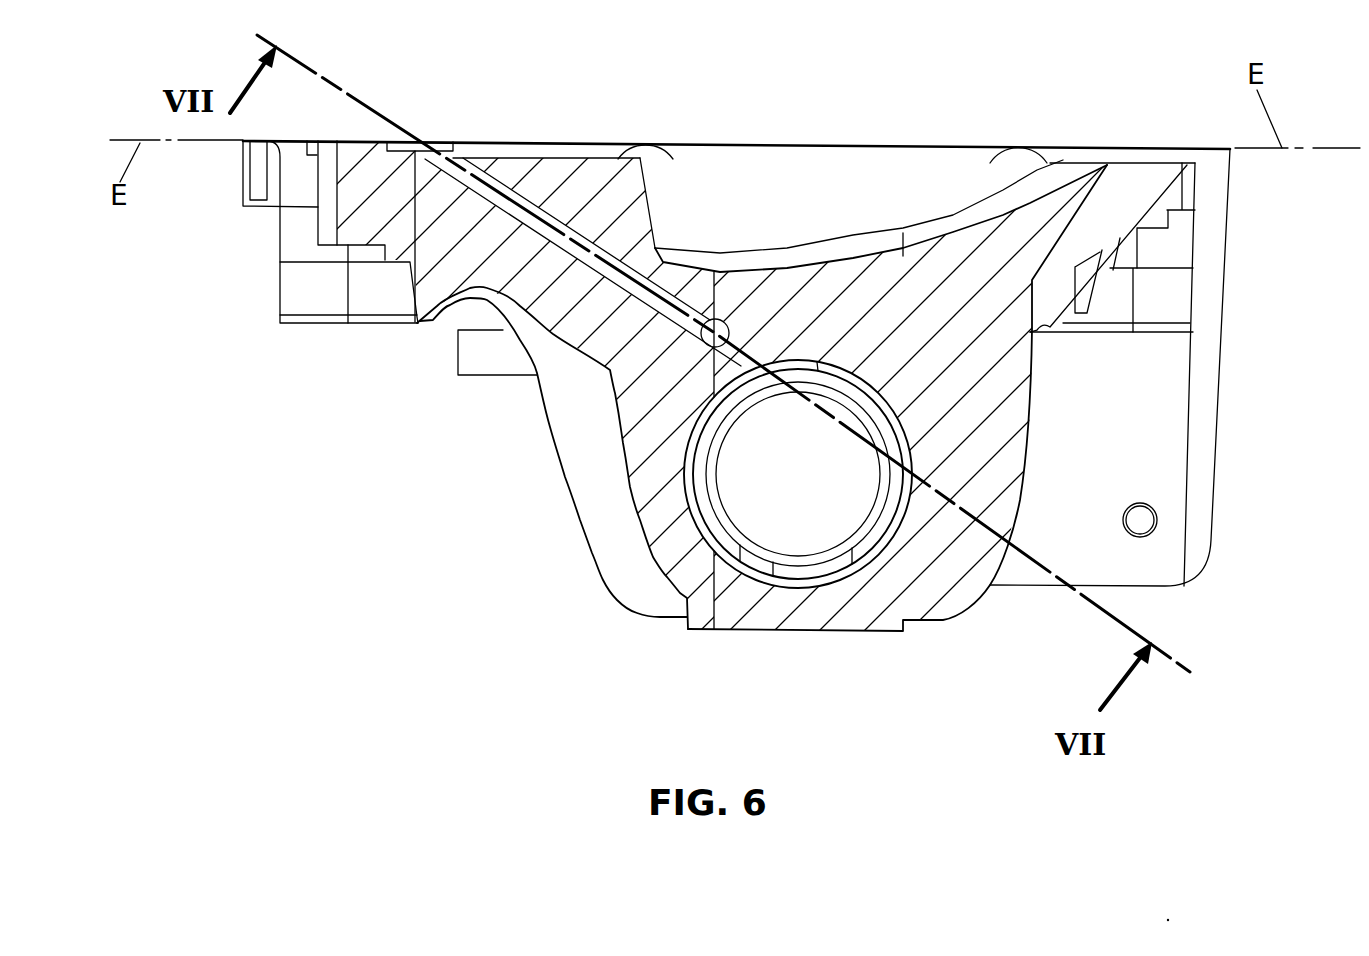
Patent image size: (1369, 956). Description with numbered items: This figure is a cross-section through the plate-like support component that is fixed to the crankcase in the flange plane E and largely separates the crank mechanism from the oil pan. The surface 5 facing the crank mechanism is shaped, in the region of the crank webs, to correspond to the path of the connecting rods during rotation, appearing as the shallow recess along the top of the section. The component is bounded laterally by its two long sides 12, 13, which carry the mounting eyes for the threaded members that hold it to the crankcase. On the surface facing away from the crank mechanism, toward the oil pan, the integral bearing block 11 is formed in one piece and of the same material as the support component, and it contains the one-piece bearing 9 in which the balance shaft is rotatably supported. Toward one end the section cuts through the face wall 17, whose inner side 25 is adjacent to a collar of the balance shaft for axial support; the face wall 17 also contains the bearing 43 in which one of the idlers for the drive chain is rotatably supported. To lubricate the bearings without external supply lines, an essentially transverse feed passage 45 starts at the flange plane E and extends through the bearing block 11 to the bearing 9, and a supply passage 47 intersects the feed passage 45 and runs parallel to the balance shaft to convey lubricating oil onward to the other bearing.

The surface 5 is at (937, 178).
The bearing 9 is at (800, 553).
The bearing block 11 is at (845, 618).
The long side 12 is at (330, 334).
The long side 13 is at (1248, 217).
The face wall 17 is at (1163, 478).
The inner side 25 is at (1173, 422).
The bearing 43 is at (1143, 522).
The feed passage 45 is at (560, 227).
The supply passage 47 is at (722, 320).